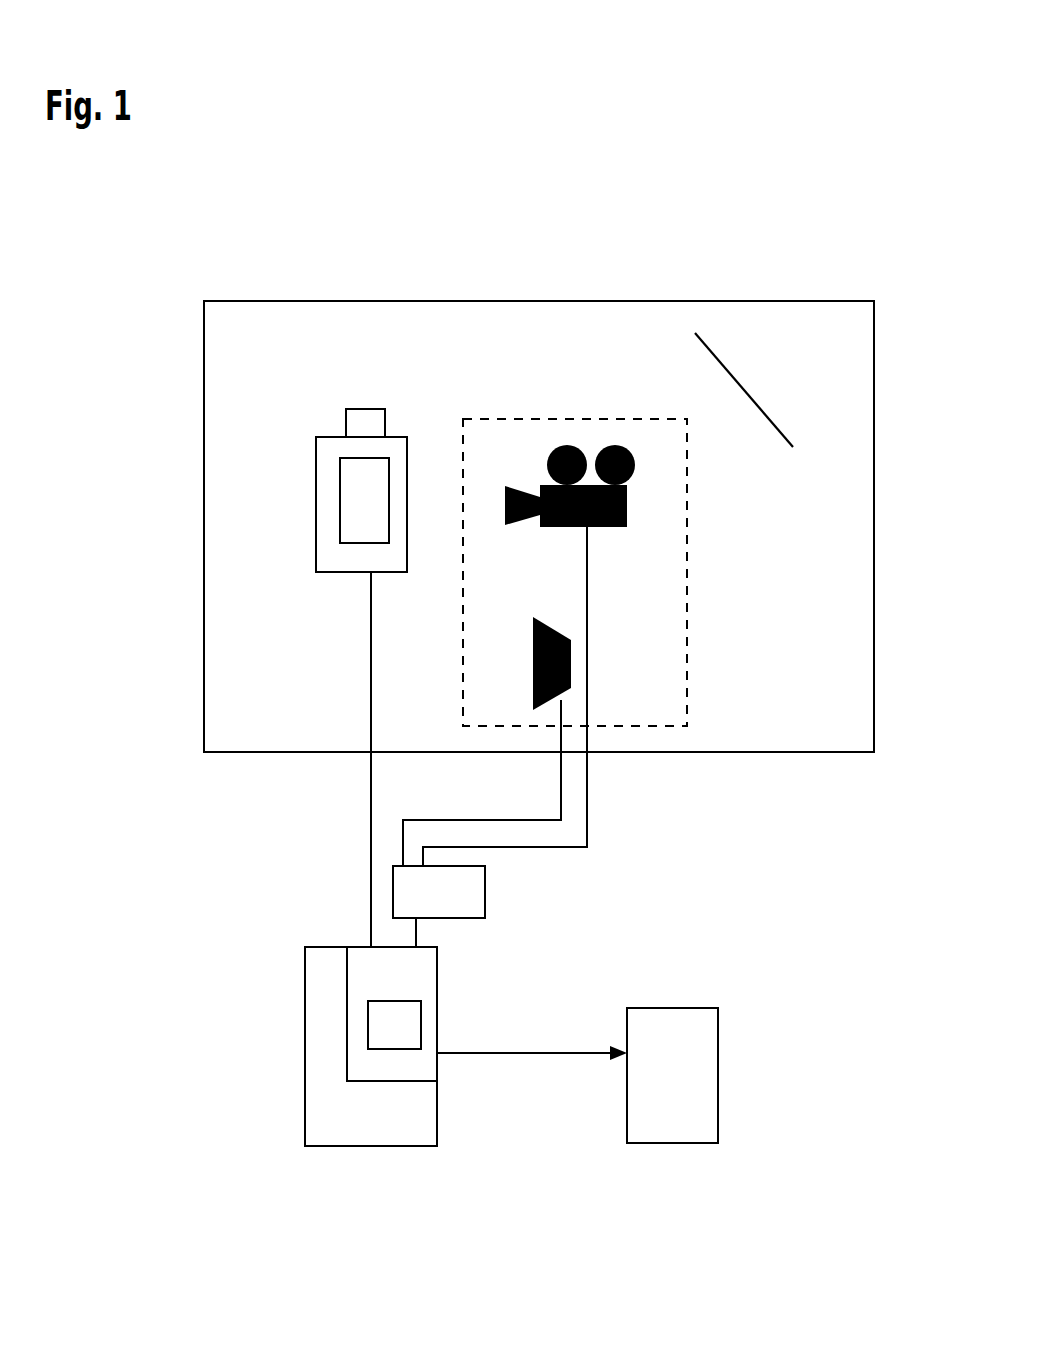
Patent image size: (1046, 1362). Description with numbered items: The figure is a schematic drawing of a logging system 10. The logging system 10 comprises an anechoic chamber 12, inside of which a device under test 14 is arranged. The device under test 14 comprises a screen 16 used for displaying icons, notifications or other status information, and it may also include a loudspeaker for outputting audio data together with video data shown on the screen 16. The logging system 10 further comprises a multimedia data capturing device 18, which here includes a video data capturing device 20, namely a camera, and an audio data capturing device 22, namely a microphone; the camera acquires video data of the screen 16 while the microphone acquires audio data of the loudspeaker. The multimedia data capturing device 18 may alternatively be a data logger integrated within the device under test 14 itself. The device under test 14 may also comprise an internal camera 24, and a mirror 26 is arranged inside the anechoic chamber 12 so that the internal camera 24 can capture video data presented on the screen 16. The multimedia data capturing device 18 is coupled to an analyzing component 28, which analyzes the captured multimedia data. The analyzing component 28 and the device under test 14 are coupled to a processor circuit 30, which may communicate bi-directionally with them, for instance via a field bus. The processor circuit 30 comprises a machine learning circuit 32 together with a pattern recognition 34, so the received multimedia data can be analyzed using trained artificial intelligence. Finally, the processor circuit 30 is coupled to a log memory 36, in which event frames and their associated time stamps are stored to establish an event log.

The logging system 10 is at (792, 128).
The anechoic chamber 12 is at (583, 300).
The device under test 14 is at (316, 457).
The screen 16 is at (340, 498).
The multimedia data capturing device 18 is at (323, 565).
The video data capturing device 20 is at (630, 450).
The audio data capturing device 22 is at (572, 677).
The internal camera 24 is at (346, 422).
The mirror 26 is at (748, 388).
The analyzing component 28 is at (485, 892).
The processor circuit 30 is at (345, 1146).
The machine learning circuit 32 is at (423, 1083).
The pattern recognition 34 is at (421, 1026).
The log memory 36 is at (718, 1077).